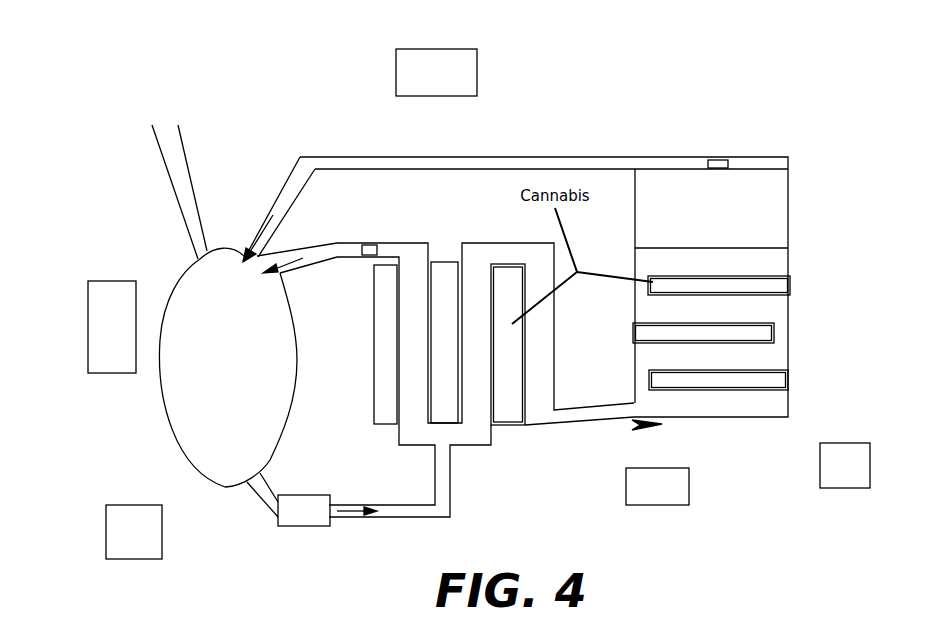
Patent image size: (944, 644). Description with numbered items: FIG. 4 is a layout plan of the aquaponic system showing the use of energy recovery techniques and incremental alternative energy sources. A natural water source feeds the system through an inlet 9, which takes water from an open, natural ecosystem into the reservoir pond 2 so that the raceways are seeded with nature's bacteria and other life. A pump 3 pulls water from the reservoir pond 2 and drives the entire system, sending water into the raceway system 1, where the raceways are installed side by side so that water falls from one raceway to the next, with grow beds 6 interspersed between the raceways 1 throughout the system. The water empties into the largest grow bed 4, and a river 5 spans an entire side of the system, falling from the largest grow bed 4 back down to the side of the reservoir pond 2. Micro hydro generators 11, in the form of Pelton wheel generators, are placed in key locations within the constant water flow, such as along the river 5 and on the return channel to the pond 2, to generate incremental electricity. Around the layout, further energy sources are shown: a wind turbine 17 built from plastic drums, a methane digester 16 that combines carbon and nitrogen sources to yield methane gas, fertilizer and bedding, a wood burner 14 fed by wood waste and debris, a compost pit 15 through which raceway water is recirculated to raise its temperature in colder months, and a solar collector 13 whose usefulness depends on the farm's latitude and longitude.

The raceway system 1 is at (538, 263).
The reservoir pond 2 is at (273, 347).
The pump 3 is at (315, 527).
The largest grow bed 4 is at (734, 208).
The river 5 is at (565, 166).
The grow beds 6 is at (383, 312).
The inlet 9 is at (178, 178).
The micro hydro generators 11 is at (370, 246).
The solar 13 is at (102, 317).
The wood 14 is at (672, 490).
The compost 15 is at (850, 462).
The methane digesters 16 is at (132, 518).
The wind 17 is at (408, 76).